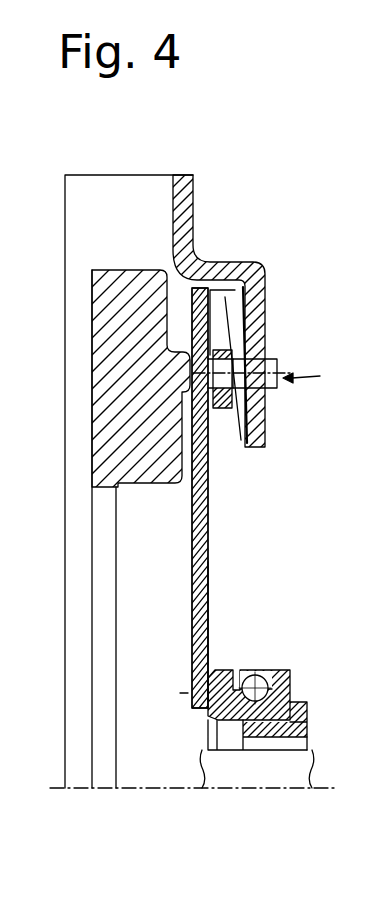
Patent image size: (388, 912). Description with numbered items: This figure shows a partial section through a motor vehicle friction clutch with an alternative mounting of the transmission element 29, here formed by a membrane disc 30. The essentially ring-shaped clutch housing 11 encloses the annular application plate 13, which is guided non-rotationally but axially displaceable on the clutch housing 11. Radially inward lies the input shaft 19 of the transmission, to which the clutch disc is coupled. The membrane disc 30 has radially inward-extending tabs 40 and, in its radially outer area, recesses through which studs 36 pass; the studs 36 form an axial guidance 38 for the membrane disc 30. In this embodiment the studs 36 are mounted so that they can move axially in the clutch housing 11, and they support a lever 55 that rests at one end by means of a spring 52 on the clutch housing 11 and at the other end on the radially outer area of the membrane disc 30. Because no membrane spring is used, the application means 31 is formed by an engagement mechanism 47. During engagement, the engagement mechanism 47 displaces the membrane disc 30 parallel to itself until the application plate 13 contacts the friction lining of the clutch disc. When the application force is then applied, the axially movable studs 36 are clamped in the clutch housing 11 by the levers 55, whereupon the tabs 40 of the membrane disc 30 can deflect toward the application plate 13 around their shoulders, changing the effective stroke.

The clutch housing 11 is at (183, 198).
The application plate 13 is at (118, 276).
The input shaft 19 is at (287, 770).
The transmission element 29 is at (208, 562).
The membrane disc 30 is at (198, 515).
The application means 31 is at (258, 665).
The studs 36 is at (267, 365).
The axial guidance 38 is at (321, 372).
The tabs 40 is at (203, 597).
The engagement mechanism 47 is at (290, 669).
The spring 52 is at (238, 416).
The lever 55 is at (223, 293).